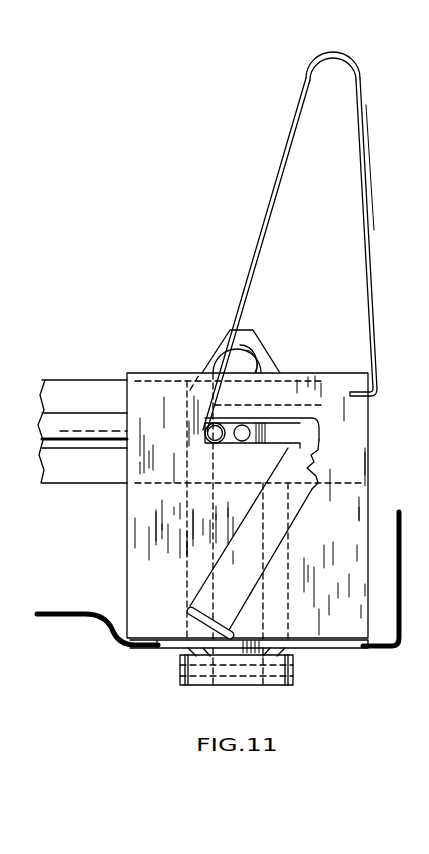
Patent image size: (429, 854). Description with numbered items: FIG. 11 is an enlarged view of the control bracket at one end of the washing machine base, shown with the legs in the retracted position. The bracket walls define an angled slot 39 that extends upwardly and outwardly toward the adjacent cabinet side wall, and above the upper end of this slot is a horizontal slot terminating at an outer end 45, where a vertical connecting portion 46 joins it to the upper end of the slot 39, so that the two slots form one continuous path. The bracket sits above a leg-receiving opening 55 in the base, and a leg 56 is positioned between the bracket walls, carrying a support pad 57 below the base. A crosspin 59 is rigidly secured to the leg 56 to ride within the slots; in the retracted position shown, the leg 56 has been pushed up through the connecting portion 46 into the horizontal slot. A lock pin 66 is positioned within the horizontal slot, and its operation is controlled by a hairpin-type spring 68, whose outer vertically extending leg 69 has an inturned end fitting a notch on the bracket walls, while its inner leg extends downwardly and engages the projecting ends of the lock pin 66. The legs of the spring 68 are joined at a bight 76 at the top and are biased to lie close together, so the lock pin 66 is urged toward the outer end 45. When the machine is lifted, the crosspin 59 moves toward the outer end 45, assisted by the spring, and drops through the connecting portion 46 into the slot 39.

The bight 76 is at (345, 52).
The hairpin-type spring 68 is at (271, 194).
The outer vertically extending leg 69 is at (367, 193).
The lock pin 66 is at (213, 432).
The crosspin 59 is at (240, 445).
The outer end 45 is at (266, 485).
The vertical connecting portion 46 is at (308, 458).
The slot 39 is at (226, 562).
The leg-receiving opening 55 is at (163, 649).
The support pad 57 is at (198, 682).
The leg 56 is at (235, 651).